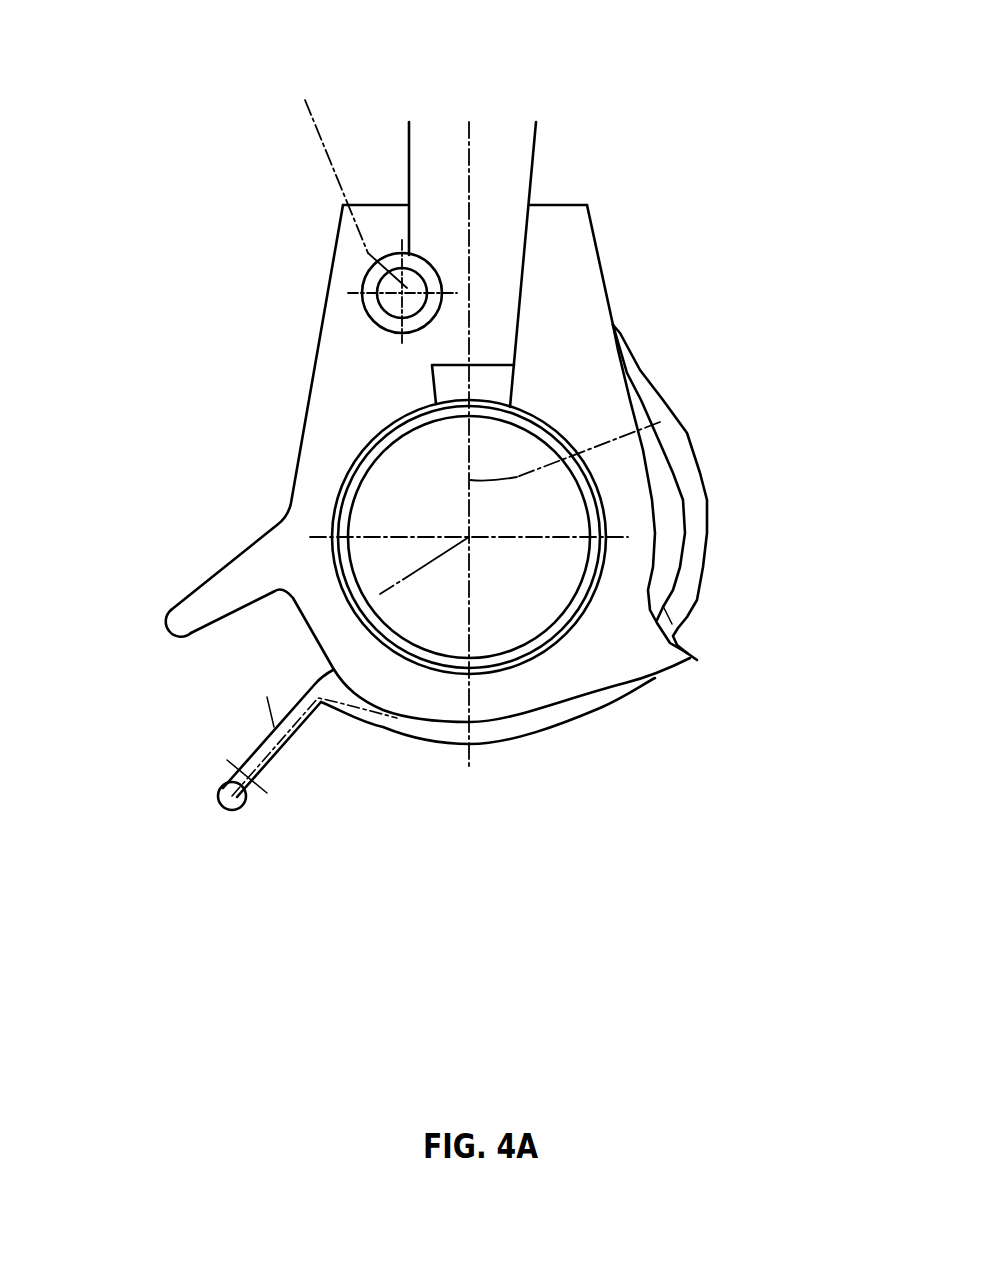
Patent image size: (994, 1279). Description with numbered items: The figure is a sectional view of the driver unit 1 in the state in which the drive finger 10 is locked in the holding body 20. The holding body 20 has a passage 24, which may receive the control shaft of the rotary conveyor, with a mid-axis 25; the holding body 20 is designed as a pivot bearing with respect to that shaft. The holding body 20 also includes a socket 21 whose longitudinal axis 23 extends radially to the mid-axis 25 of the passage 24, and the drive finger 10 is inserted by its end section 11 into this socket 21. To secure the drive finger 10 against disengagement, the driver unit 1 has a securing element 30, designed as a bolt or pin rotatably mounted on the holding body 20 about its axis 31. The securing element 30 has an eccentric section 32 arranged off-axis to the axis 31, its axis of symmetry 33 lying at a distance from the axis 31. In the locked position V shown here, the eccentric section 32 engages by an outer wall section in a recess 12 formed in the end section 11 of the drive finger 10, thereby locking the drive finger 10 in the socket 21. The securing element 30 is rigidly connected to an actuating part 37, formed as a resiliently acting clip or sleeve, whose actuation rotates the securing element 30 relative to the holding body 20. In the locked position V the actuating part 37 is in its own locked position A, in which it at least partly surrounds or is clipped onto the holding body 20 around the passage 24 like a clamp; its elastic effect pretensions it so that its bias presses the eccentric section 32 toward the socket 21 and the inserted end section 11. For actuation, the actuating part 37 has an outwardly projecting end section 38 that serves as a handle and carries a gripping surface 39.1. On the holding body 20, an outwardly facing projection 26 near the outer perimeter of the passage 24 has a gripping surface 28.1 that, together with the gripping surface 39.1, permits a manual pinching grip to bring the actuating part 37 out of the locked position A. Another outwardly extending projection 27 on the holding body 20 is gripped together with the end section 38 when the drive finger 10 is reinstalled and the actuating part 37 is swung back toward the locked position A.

The driver unit 1 is at (727, 273).
The drive finger 10 is at (520, 120).
The end section 11 is at (483, 271).
The recess 12 is at (427, 256).
The holding body 20 is at (292, 423).
The socket 21 is at (490, 382).
The longitudinal axis of the socket 23 is at (660, 422).
The passage 24 is at (510, 595).
The mid-axis of the passage 25 is at (380, 594).
The projection 26 is at (697, 660).
The projection 27 is at (187, 614).
The gripping surface 28.1 is at (690, 607).
The securing element 30 is at (313, 243).
The axis of the securing element 31 is at (368, 315).
The eccentric section 32 is at (420, 275).
The axis of symmetry of the eccentric section 33 is at (317, 165).
The actuating part 37 is at (693, 495).
The end section 38 is at (258, 745).
The gripping surface 39.1 is at (272, 728).
The locked position V is at (378, 185).
The locked position A is at (338, 780).